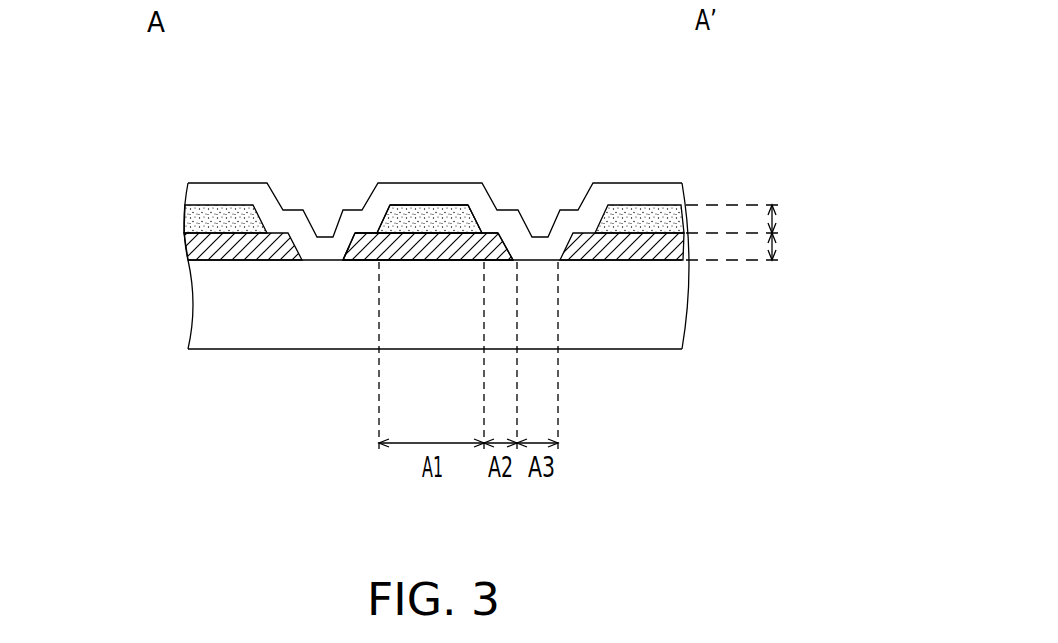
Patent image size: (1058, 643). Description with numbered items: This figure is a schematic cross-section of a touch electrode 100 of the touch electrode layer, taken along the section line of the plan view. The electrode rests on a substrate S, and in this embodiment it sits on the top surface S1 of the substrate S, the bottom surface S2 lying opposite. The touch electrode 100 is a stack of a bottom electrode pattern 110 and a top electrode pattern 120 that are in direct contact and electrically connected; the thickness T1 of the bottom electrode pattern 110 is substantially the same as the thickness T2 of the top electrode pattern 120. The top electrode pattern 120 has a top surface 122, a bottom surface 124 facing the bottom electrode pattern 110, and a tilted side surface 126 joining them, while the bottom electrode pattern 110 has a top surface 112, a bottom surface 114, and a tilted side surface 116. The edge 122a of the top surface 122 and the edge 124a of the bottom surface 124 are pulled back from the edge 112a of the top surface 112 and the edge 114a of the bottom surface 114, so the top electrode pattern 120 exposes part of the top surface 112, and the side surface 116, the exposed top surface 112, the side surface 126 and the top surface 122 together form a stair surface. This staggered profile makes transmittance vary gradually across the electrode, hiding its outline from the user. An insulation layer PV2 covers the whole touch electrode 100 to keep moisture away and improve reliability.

The touch electrode 100 is at (95, 193).
The bottom electrode pattern 110 is at (197, 245).
The top surface of the bottom electrode pattern 112 is at (375, 232).
The edge of the top surface of the bottom electrode pattern 112a is at (354, 232).
The bottom surface of the bottom electrode pattern 114 is at (383, 266).
The edge of the bottom surface of the bottom electrode pattern 114a is at (342, 267).
The side surface of the bottom electrode pattern 116 is at (505, 240).
The top electrode pattern 120 is at (197, 217).
The top surface of the top electrode pattern 122 is at (436, 229).
The edge of the top surface of the top electrode pattern 122a is at (391, 204).
The bottom surface of the top electrode pattern 124 is at (432, 236).
The edge of the bottom surface of the top electrode pattern 124a is at (357, 231).
The side surface of the top electrode pattern 126 is at (480, 225).
The insulation layer PV2 is at (668, 190).
The substrate S is at (463, 285).
The top surface of the substrate S1 is at (623, 258).
The bottom surface of the substrate S2 is at (628, 350).
The thickness of the bottom electrode pattern T1 is at (746, 251).
The thickness of the top electrode pattern T2 is at (747, 217).